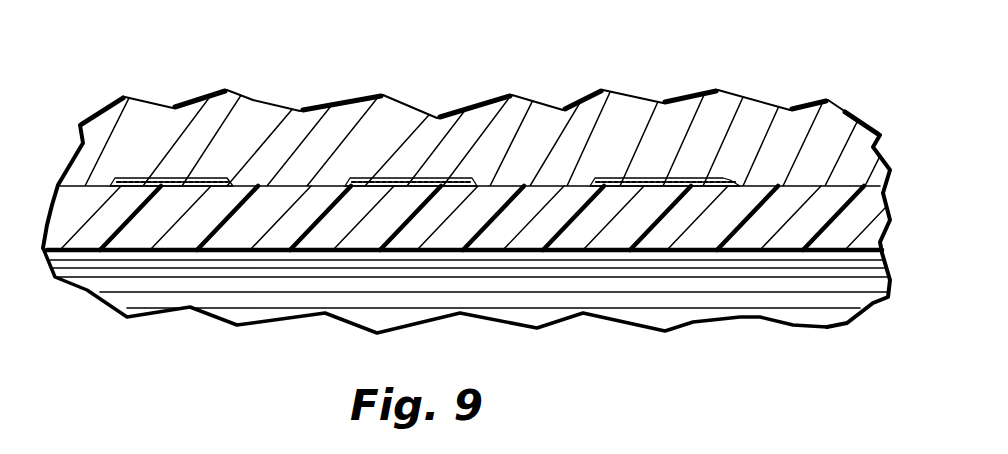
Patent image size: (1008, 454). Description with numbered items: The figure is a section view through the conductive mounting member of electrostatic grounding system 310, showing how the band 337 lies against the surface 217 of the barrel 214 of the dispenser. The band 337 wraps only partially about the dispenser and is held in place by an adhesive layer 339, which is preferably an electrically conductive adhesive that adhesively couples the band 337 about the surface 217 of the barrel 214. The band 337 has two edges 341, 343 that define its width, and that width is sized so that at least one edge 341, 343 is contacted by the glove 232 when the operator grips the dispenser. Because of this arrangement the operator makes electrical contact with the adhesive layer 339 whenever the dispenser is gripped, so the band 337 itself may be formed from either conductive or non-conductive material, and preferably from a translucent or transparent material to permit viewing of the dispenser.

The electrostatic grounding system 310 is at (466, 171).
The surface of barrel 217 is at (49, 200).
The glove 232 is at (868, 120).
The barrel 214 is at (497, 218).
The adhesive layer 339 is at (110, 182).
The band 337 is at (134, 178).
The edge of band 341 is at (345, 178).
The edge of band 343 is at (478, 178).